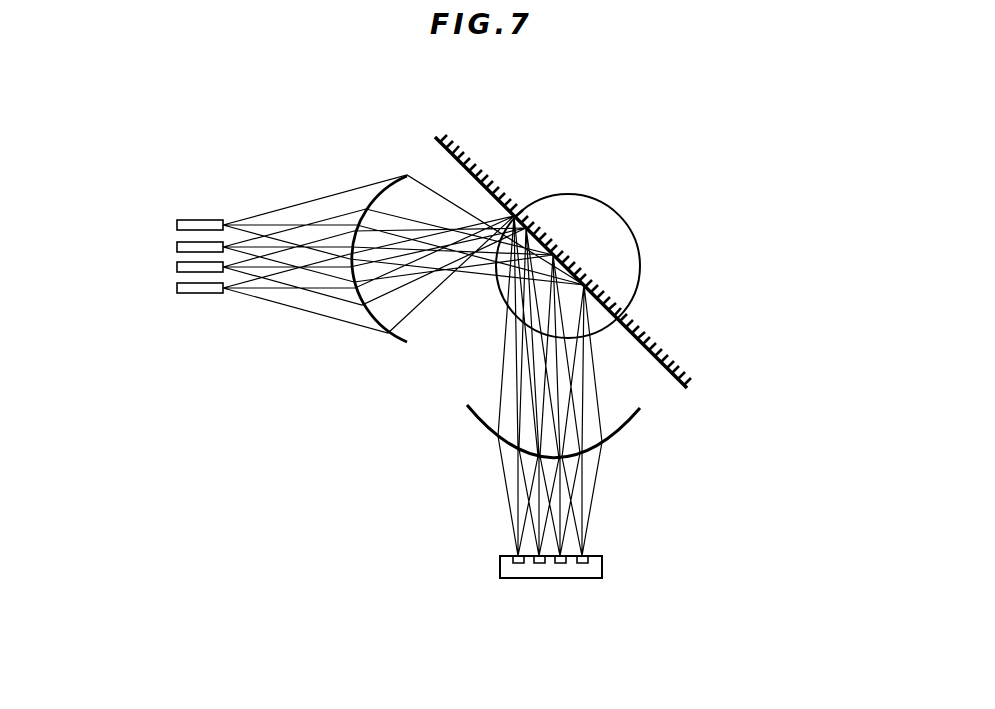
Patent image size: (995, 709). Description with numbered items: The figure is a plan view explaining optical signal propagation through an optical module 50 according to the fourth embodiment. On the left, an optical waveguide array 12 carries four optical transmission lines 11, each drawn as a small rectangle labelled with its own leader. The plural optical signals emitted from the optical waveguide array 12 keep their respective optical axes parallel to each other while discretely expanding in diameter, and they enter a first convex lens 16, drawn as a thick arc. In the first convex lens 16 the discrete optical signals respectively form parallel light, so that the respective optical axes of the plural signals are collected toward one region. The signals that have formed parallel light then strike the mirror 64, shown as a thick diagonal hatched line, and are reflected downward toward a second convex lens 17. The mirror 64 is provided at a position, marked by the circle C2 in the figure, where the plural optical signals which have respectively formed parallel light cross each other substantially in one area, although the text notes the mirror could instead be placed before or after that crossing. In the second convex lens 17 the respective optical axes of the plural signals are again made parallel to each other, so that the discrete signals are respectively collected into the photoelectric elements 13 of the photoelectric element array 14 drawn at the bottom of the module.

The optical transmission line 11 is at (177, 223).
The optical waveguide array 12 is at (188, 219).
The photoelectric element 13 is at (540, 563).
The photoelectric element array 14 is at (578, 580).
The first convex lens 16 is at (400, 178).
The second convex lens 17 is at (487, 423).
The optical module 50 is at (713, 185).
The mirror 64 is at (485, 178).
The circle C2 is at (598, 200).